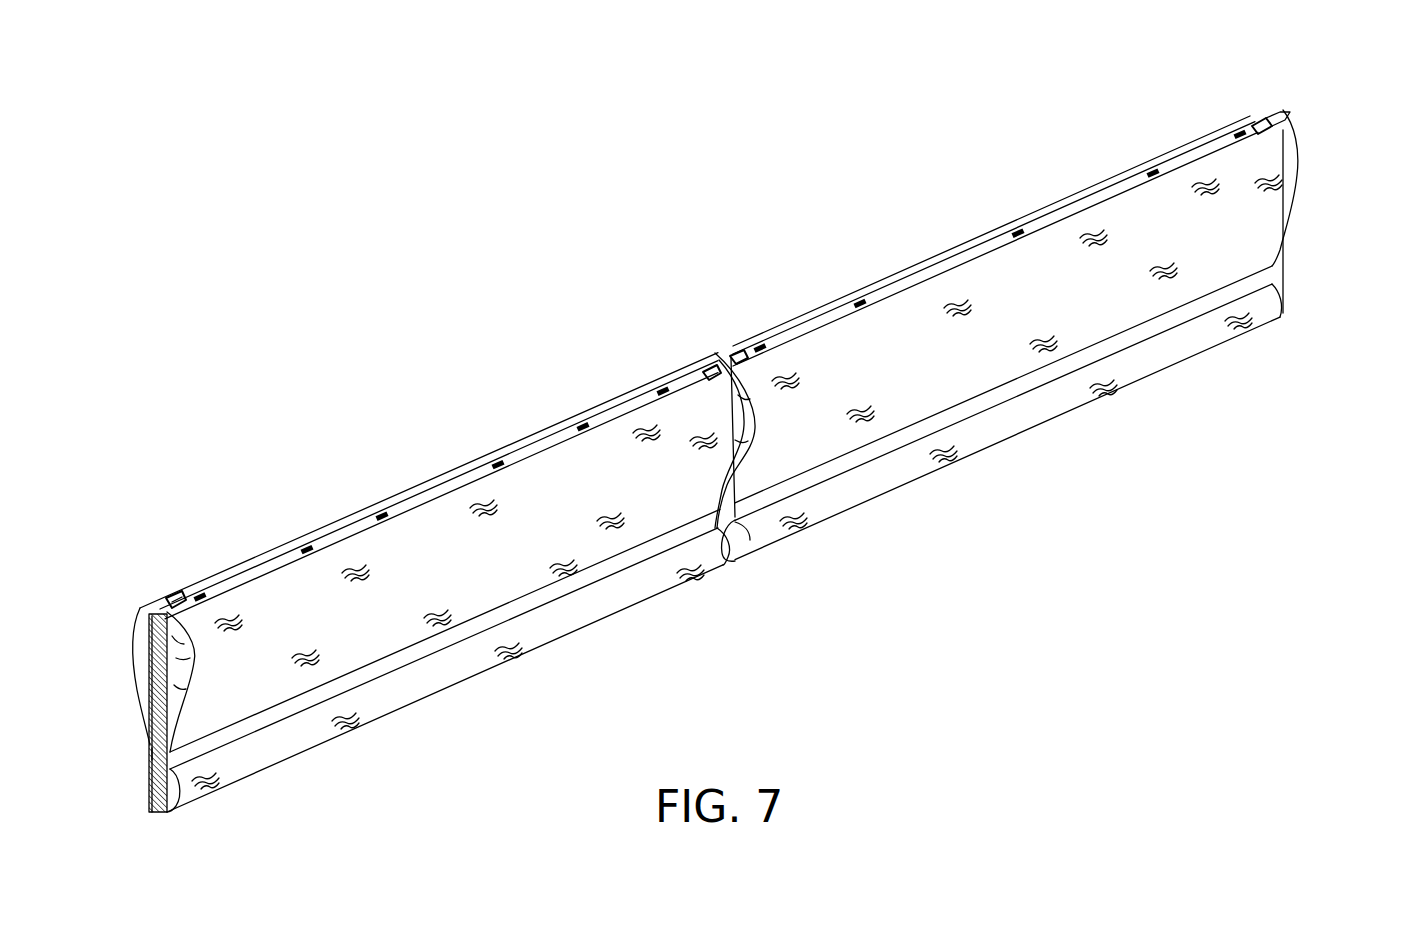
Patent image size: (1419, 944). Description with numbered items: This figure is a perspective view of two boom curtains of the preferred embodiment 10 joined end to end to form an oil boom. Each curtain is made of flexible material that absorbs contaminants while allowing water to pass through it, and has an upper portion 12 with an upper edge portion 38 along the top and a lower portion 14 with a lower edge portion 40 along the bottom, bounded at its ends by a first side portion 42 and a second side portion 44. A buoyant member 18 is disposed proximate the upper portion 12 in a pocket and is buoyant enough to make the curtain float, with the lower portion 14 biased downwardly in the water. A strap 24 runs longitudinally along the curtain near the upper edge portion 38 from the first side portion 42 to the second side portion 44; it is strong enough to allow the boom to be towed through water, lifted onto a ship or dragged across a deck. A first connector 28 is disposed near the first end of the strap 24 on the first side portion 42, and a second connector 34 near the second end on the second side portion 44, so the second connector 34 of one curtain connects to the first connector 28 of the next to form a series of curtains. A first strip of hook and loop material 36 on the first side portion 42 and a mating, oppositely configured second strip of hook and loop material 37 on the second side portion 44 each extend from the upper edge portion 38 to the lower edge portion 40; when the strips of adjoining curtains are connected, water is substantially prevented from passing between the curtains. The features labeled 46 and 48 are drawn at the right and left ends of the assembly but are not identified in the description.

The boom curtain 10 is at (706, 236).
The upper portion 12 is at (1320, 106).
The lower portion 14 is at (1299, 252).
The buoyant member 18 is at (123, 631).
The strap 24 is at (438, 490).
The first connector 28 is at (173, 600).
The second connector 34 is at (716, 375).
The first strip of hook and loop material 36 is at (158, 814).
The second strip of hook and loop material 37 is at (748, 565).
The upper edge portion 38 is at (1246, 113).
The lower edge portion 40 is at (1222, 352).
The first side portion 42 is at (140, 598).
The second side portion 44 is at (1285, 327).
The bulged wall 46 is at (1282, 218).
The end cap 48 is at (128, 718).